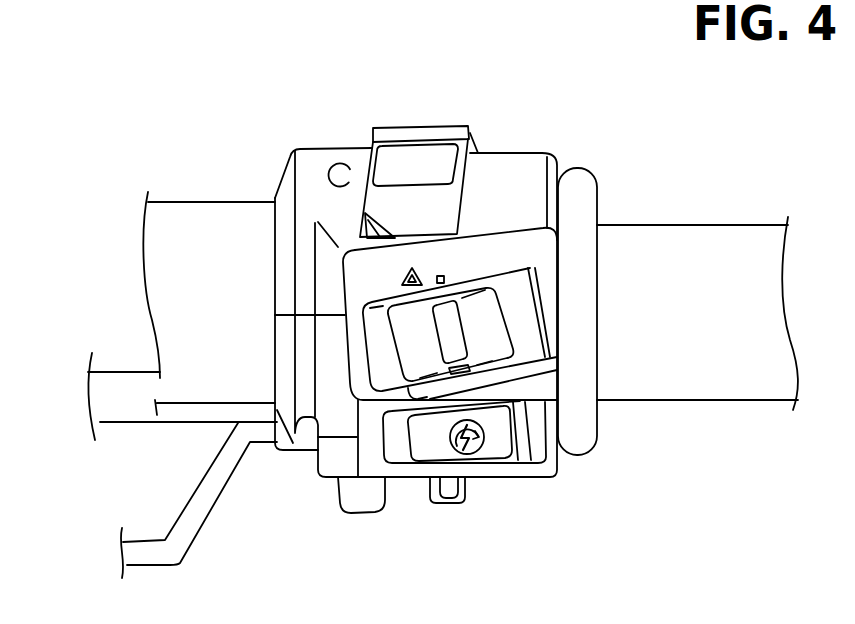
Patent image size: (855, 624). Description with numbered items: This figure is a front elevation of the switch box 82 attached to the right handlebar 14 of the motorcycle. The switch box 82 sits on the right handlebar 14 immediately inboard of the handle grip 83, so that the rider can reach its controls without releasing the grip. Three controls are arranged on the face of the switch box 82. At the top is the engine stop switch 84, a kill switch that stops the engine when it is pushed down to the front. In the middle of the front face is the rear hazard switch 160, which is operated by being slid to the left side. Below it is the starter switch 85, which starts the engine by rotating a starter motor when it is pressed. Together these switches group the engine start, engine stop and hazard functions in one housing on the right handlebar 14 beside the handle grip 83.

The handlebar 14 is at (207, 223).
The switch box 82 is at (510, 173).
The handle grip 83 is at (720, 248).
The engine stop switch 84 is at (418, 133).
The starter switch 85 is at (500, 448).
The rear hazard switch 160 is at (485, 328).